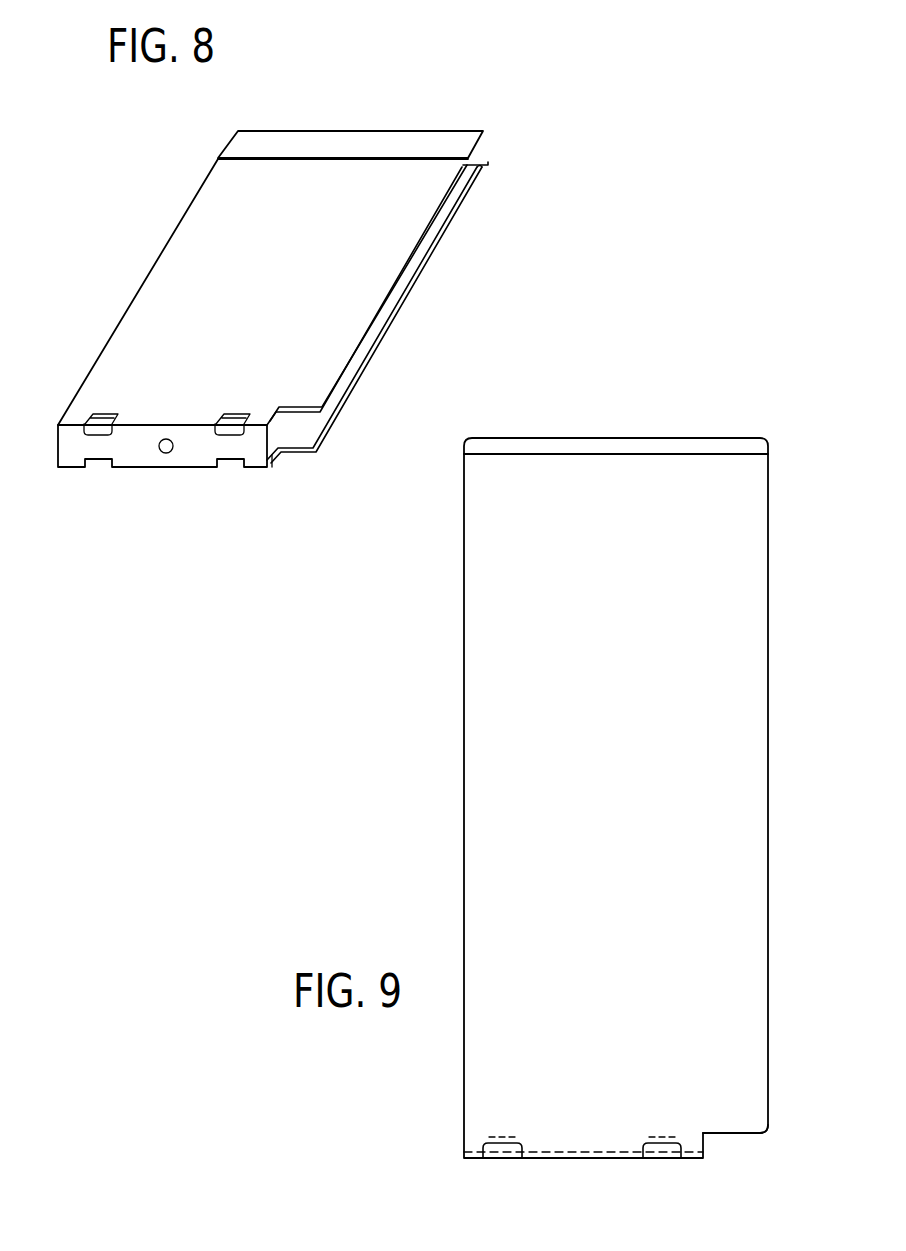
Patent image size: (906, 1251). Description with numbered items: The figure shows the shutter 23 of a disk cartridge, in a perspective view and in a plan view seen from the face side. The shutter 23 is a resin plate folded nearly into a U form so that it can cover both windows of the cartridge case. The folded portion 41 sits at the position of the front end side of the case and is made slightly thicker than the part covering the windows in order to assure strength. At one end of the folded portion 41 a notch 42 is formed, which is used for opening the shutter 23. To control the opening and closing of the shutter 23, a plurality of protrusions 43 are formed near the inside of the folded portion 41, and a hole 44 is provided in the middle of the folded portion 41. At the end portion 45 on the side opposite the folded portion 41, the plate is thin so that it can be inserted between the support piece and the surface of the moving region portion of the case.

In FIG. 8, the shutter 23 is at (134, 282).
In FIG. 8, the folded portion 41 is at (72, 456).
In FIG. 9, the folded portion 41 is at (465, 1158).
In FIG. 8, the notch 42 is at (282, 455).
In FIG. 9, the notch 42 is at (725, 1140).
In FIG. 9, the protrusions 43 is at (517, 1160).
In FIG. 8, the hole 44 is at (164, 453).
In FIG. 8, the end portion 45 is at (328, 140).
In FIG. 9, the end portion 45 is at (634, 442).